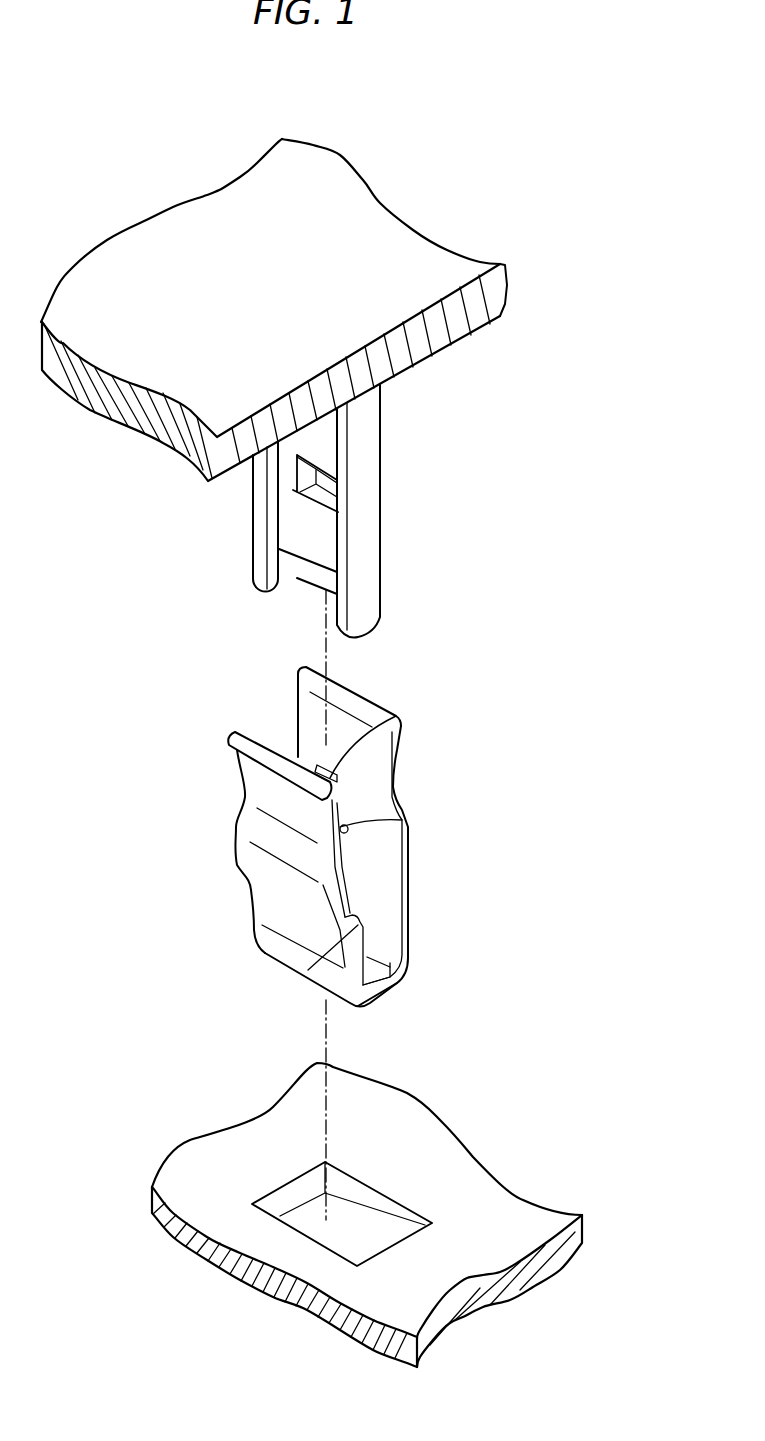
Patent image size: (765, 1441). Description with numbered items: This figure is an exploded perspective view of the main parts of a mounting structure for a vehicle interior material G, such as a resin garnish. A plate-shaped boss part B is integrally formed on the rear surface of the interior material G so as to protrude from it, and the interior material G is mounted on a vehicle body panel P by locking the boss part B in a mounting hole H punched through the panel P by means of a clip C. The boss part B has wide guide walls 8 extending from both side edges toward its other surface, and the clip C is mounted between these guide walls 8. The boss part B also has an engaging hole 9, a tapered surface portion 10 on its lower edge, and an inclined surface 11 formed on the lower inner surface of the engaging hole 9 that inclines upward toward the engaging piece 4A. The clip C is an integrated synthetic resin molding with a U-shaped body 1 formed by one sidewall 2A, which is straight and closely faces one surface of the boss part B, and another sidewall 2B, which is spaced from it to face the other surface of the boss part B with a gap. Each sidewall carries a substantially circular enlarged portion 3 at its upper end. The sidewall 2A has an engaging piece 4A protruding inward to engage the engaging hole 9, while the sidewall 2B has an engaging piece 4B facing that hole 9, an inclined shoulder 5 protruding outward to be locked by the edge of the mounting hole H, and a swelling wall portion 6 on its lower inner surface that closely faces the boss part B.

The vehicle interior material G is at (317, 160).
The boss part B is at (300, 529).
The guide walls 8 is at (345, 513).
The engaging hole 9 is at (317, 488).
The tapered surface portion 10 is at (313, 570).
The inclined surface 11 is at (313, 505).
The U-shaped body 1 is at (351, 835).
The one sidewall 2A is at (412, 855).
The other sidewall 2B is at (298, 910).
The enlarged portion 3 is at (370, 708).
The engaging piece 4A is at (327, 770).
The engaging piece 4B is at (405, 824).
The inclined shoulder 5 is at (273, 843).
The swelling wall portion 6 is at (298, 968).
The clip C is at (170, 828).
The vehicle body panel P is at (467, 1177).
The mounting hole H is at (313, 1220).